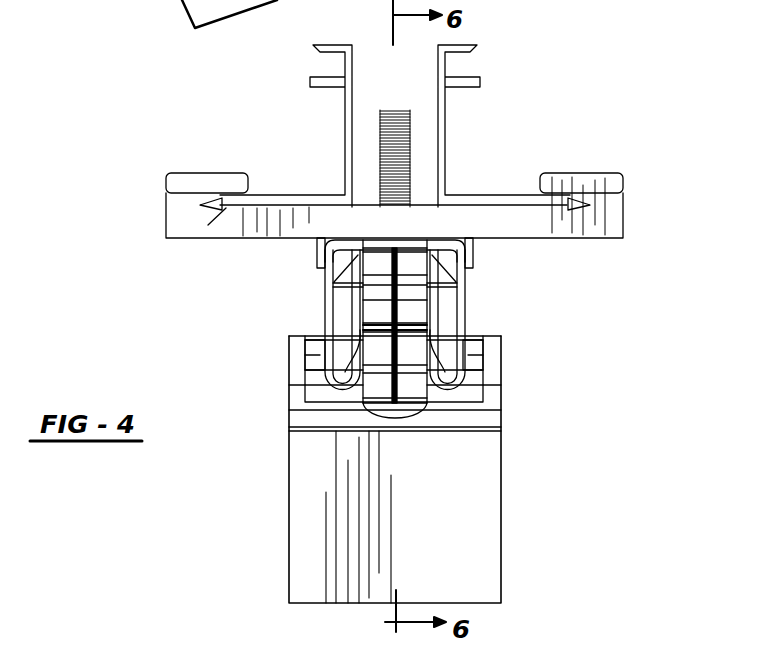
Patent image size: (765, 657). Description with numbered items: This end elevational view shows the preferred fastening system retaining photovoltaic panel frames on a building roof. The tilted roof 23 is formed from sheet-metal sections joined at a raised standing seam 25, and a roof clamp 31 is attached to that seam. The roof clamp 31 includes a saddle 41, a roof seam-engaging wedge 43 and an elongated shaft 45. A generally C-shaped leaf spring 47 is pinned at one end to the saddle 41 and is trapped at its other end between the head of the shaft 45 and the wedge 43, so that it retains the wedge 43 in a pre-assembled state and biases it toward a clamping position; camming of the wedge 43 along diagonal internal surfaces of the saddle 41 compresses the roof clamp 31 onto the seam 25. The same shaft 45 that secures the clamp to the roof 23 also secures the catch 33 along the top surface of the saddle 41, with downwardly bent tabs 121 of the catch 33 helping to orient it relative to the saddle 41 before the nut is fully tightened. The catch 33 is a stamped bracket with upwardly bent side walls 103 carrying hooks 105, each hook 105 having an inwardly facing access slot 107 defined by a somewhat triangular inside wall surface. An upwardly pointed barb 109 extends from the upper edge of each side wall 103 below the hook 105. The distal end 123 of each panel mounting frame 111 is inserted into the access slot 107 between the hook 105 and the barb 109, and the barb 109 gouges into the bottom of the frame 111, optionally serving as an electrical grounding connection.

The tilted roof 23 is at (470, 505).
The standing seam 25 is at (497, 366).
The roof clamp 31 is at (538, 297).
The catch 33 is at (200, 235).
The saddle 41 is at (328, 323).
The roof seam-engaging wedge 43 is at (313, 355).
The shaft 45 is at (380, 133).
The leaf spring 47 is at (373, 305).
The side wall 103 is at (530, 215).
The hook 105 is at (238, 180).
The access slot 107 is at (213, 204).
The barb 109 is at (237, 196).
The mounting frame 111 is at (345, 157).
The tab 121 is at (317, 260).
The distal end 123 is at (220, 207).